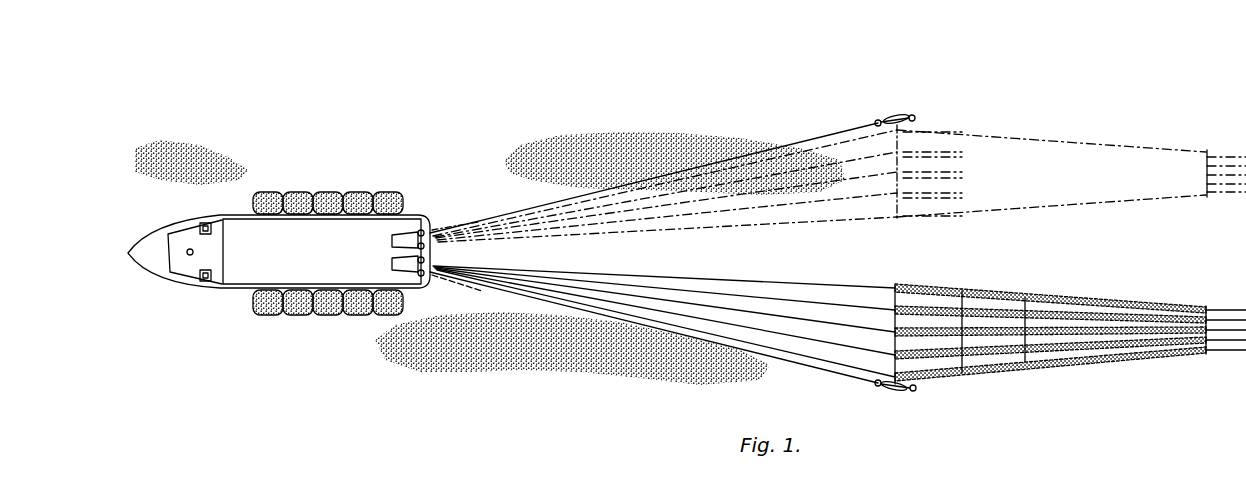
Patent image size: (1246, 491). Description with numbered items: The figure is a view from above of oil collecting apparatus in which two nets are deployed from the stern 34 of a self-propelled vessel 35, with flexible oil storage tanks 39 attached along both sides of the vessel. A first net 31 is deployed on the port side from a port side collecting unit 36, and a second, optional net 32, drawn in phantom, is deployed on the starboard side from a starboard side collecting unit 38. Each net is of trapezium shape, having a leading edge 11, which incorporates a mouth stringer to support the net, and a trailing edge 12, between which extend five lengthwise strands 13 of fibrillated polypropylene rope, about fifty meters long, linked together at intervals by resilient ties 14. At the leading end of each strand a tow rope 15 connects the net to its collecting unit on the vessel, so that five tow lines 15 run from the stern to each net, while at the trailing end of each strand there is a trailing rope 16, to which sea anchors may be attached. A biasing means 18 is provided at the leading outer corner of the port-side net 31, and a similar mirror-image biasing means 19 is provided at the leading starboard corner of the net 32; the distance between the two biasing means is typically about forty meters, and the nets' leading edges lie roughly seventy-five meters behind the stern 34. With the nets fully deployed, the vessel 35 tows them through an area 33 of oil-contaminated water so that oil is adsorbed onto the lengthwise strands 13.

The leading edge 11 is at (890, 205).
The trailing edge 12 is at (1210, 306).
The lengthwise strands 13 is at (1060, 320).
The ties 14 is at (1000, 295).
The tow rope 15 is at (565, 232).
The trailing rope 16 is at (1224, 344).
The biasing means 18 is at (911, 393).
The biasing means 19 is at (909, 114).
The first net 31 is at (1070, 330).
The second net 32 is at (1102, 162).
The area of contaminated water 33 is at (676, 152).
The stern 34 is at (436, 252).
The vessel 35 is at (248, 272).
The port side collecting unit 36 is at (392, 264).
The starboard side collecting unit 38 is at (392, 241).
The flexible oil storage tanks 39 is at (308, 192).